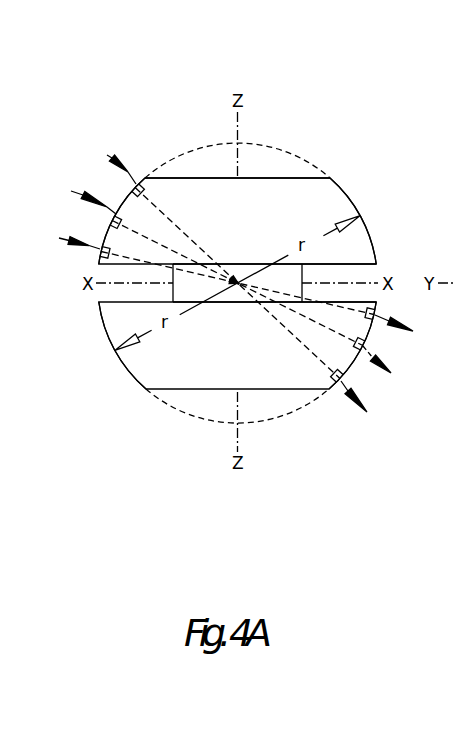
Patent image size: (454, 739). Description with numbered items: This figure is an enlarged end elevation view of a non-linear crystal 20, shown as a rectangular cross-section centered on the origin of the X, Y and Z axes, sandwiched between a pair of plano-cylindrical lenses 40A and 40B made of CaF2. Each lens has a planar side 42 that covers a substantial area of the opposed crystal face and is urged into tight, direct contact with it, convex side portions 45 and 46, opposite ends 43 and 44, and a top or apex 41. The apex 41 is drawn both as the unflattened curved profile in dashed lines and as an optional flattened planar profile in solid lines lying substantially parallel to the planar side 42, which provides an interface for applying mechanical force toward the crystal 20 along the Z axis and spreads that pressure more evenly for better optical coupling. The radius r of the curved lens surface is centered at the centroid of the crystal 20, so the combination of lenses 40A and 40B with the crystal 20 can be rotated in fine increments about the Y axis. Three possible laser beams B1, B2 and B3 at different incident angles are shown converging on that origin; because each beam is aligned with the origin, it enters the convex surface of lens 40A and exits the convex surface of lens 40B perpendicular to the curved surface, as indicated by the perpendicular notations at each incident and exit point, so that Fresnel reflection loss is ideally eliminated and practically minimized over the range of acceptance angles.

The non-linear crystal 20 is at (247, 304).
The plano-cylindrical lens 40A is at (268, 177).
The plano-cylindrical lens 40B is at (205, 390).
The apex 41 is at (183, 177).
The planar side 42 is at (357, 270).
The end 43 is at (447, 210).
The end 44 is at (248, 224).
The convex side portion 45 is at (123, 203).
The convex side portion 46 is at (341, 188).
The laser beam B1 is at (99, 244).
The laser beam B2 is at (102, 204).
The laser beam B3 is at (124, 166).